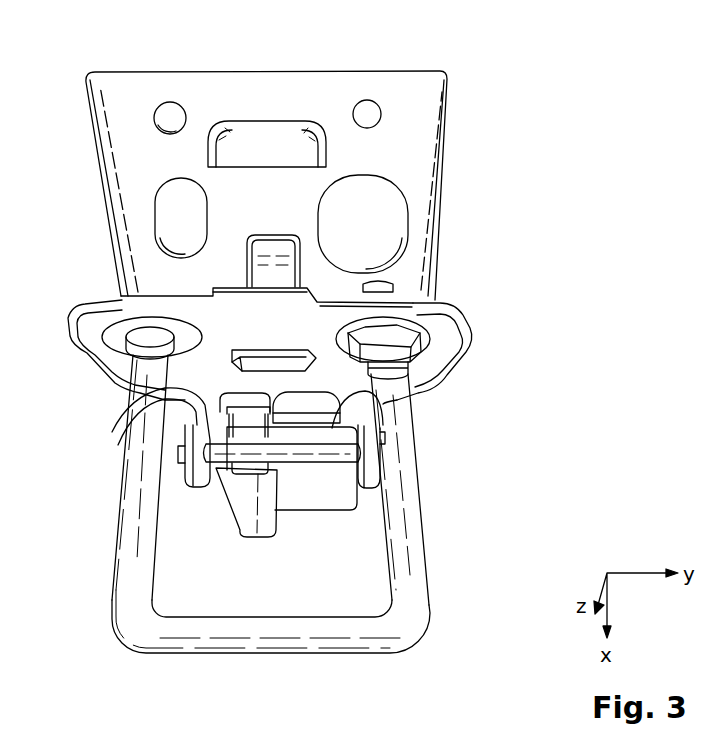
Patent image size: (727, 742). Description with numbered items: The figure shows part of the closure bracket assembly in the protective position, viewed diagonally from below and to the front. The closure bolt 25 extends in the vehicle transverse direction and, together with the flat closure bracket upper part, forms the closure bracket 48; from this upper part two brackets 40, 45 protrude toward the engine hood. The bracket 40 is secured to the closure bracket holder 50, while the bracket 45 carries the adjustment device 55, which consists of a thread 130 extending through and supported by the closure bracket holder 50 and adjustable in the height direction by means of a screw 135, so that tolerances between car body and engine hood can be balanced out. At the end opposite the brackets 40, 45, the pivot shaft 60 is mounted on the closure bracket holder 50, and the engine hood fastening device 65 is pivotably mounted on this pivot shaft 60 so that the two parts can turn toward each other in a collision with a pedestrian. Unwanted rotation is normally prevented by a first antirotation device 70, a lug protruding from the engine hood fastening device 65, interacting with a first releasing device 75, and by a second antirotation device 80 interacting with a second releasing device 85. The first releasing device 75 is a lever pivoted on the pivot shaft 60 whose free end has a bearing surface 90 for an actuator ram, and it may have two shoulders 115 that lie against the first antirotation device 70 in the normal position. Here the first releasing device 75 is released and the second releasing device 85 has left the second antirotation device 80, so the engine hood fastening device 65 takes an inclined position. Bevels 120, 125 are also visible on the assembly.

The closure bolt 25 is at (283, 645).
The bracket 40 is at (137, 470).
The bracket 45 is at (418, 525).
The closure bracket 48 is at (250, 538).
The closure bracket holder 50 is at (330, 320).
The adjustment device 55 is at (441, 353).
The pivot shaft 60 is at (360, 458).
The engine hood fastening device 65 is at (335, 100).
The first antirotation device 70 is at (235, 397).
The first releasing device 75 is at (268, 517).
The second antirotation device 80 is at (277, 150).
The second releasing device 85 is at (233, 300).
The bearing surface 90 is at (252, 500).
The shoulder 115 is at (185, 422).
The bevel 120 is at (86, 353).
The bevel 125 is at (94, 140).
The thread 130 is at (441, 377).
The screw 135 is at (412, 341).